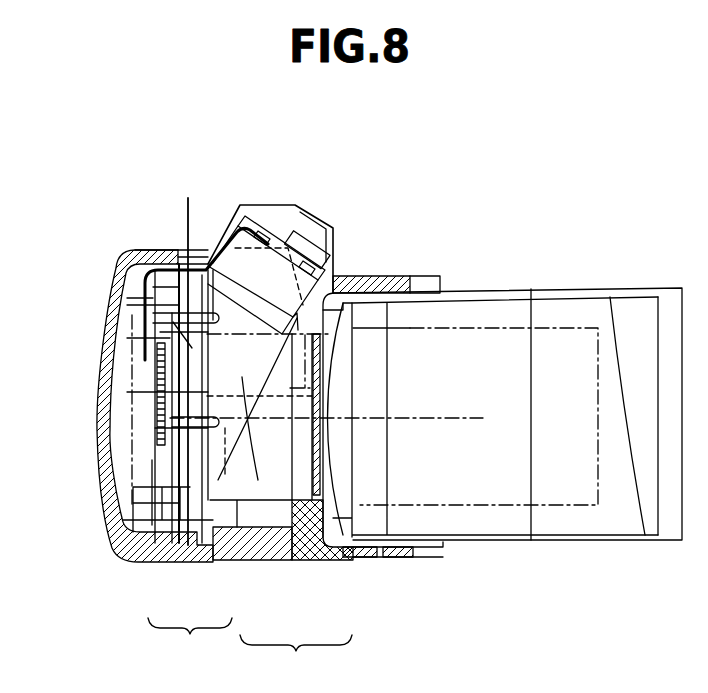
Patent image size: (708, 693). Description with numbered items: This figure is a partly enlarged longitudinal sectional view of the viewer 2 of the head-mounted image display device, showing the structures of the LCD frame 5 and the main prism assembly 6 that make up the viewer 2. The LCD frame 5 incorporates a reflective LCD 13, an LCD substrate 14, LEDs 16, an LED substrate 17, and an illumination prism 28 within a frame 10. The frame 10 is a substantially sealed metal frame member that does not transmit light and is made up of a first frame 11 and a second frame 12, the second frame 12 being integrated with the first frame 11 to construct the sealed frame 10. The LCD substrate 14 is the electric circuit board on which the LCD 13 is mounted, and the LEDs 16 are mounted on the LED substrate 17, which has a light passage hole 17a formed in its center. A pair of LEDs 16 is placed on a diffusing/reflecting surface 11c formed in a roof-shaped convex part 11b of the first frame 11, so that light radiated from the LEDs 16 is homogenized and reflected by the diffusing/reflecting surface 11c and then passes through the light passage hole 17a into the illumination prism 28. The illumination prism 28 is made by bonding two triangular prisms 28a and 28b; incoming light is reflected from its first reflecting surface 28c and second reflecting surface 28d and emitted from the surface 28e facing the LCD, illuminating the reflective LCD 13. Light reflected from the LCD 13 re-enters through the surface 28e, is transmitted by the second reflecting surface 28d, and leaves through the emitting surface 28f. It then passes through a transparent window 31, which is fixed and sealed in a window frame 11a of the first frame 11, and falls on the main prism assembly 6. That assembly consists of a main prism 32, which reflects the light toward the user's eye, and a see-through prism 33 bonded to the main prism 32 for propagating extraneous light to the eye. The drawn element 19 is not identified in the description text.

The viewer 2 is at (368, 185).
The LCD frame 5 is at (179, 241).
The main prism assembly 6 is at (534, 285).
The frame 10 is at (190, 643).
The first frame 11 is at (236, 549).
The window frame 11a is at (305, 475).
The roof-shaped convex part 11b is at (281, 203).
The diffusing/reflecting surface 11c is at (318, 232).
The second frame 12 is at (178, 550).
The reflective LCD 13 is at (156, 397).
The LCD substrate 14 is at (148, 368).
The LEDs 16 is at (272, 238).
The LED substrate 17 is at (309, 284).
The light passage hole 17a is at (322, 252).
The spring wire 19 is at (233, 231).
The illumination prism 28 is at (296, 663).
The triangular prism 28a is at (242, 377).
The triangular prism 28b is at (275, 495).
The first reflecting surface 28c is at (140, 296).
The second reflecting surface 28d is at (226, 446).
The surface facing the LCD 28e is at (210, 424).
The emitting surface 28f is at (318, 520).
The transparent window 31 is at (345, 520).
The main prism 32 is at (650, 308).
The see-through prism 33 is at (611, 305).